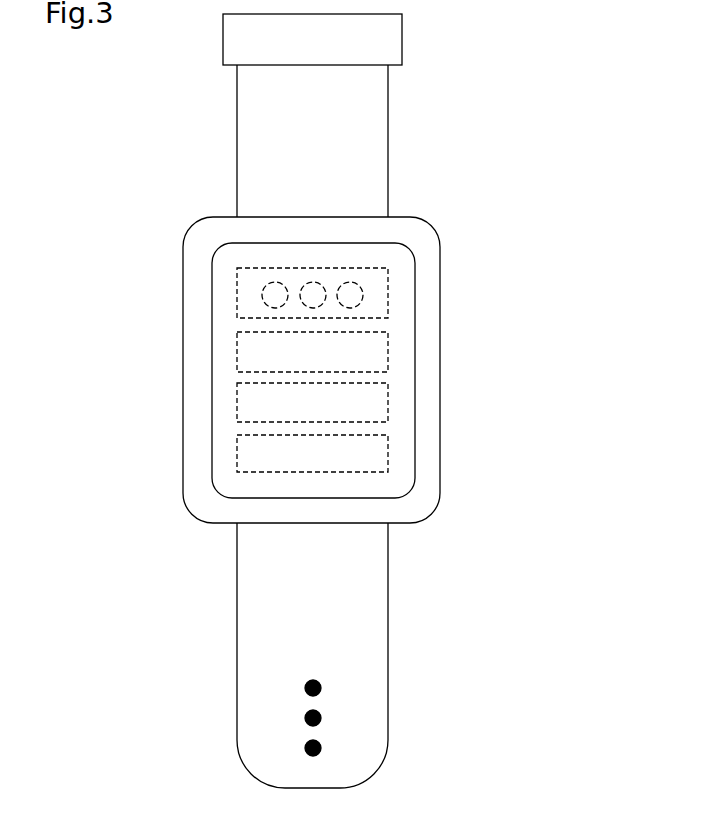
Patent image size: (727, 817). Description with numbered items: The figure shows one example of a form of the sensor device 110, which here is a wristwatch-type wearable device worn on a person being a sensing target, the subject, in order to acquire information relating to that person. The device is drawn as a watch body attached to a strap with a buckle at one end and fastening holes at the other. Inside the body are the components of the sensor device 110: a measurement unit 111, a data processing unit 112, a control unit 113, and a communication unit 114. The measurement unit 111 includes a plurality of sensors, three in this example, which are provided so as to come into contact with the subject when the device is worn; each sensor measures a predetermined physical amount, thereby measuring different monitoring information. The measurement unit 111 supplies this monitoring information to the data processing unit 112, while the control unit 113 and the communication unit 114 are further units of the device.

The sensor device 110 is at (560, 115).
The measurement unit 111 is at (388, 292).
The data processing unit 112 is at (388, 348).
The control unit 113 is at (388, 400).
The communication unit 114 is at (388, 450).